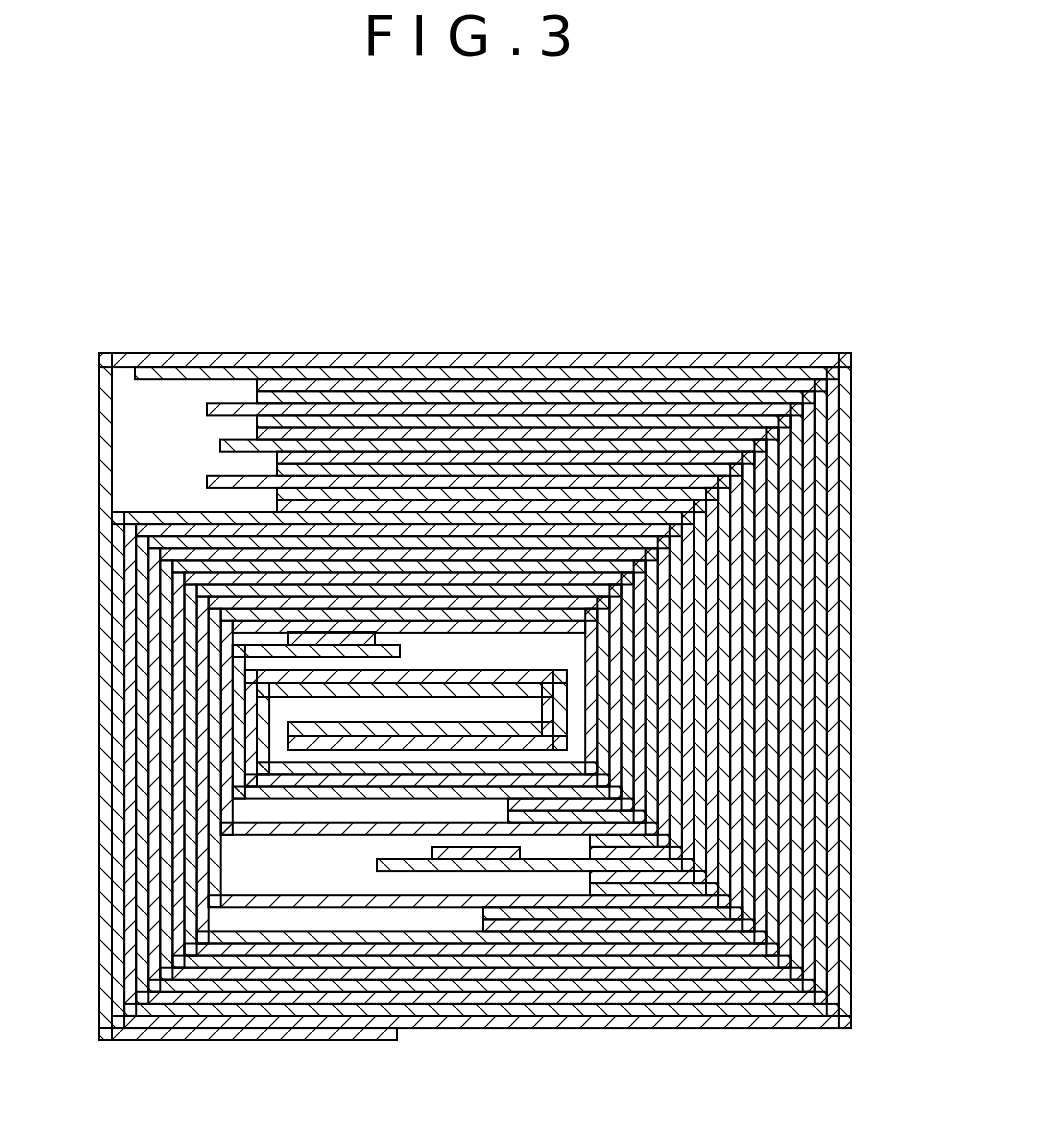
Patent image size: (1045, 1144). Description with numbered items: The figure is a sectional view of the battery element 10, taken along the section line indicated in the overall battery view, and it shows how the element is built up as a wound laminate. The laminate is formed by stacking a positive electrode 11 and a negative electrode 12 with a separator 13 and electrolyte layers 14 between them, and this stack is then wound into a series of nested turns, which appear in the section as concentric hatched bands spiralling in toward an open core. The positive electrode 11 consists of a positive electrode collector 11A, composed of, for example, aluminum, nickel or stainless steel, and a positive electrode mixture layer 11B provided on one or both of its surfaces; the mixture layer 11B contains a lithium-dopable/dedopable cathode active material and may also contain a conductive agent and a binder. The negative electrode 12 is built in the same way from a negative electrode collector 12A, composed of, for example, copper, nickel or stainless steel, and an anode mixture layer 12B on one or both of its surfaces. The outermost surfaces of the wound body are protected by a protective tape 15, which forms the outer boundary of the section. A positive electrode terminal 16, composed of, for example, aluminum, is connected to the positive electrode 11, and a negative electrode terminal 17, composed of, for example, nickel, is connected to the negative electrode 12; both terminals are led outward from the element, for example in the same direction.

The battery element 10 is at (664, 206).
The positive electrode 11 is at (205, 284).
The positive electrode collector 11A is at (237, 447).
The positive electrode mixture layer 11B is at (337, 482).
The negative electrode 12 is at (555, 284).
The negative electrode collector 12A is at (455, 375).
The anode mixture layer 12B is at (540, 462).
The separator 13 is at (605, 450).
The electrolyte layers 14 is at (700, 462).
The protective tape 15 is at (795, 358).
The positive electrode terminal 16 is at (305, 645).
The negative electrode terminal 17 is at (470, 859).